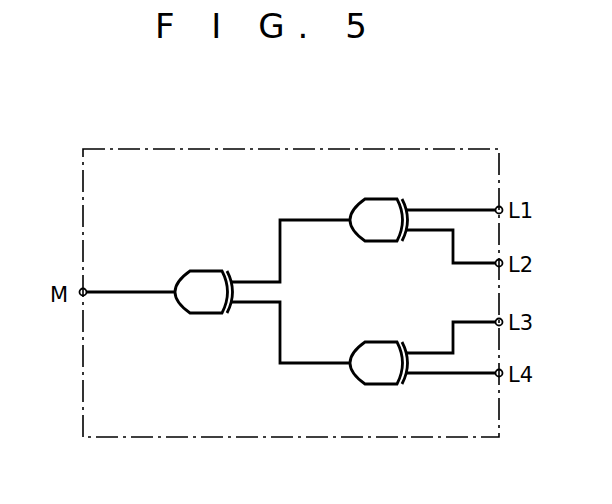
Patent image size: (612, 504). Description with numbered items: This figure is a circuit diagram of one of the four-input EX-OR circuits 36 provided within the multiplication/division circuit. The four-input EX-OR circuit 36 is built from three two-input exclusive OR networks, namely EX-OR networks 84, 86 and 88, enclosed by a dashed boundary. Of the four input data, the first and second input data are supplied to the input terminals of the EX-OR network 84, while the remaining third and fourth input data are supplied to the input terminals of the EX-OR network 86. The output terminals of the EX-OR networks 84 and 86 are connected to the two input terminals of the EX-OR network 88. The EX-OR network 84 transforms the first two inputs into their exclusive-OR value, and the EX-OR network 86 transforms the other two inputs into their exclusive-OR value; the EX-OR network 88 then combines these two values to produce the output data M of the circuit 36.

The 4-input EX-OR circuit 36 is at (423, 148).
The EX-OR network 84 is at (388, 238).
The EX-OR network 86 is at (392, 382).
The EX-OR network 88 is at (214, 312).